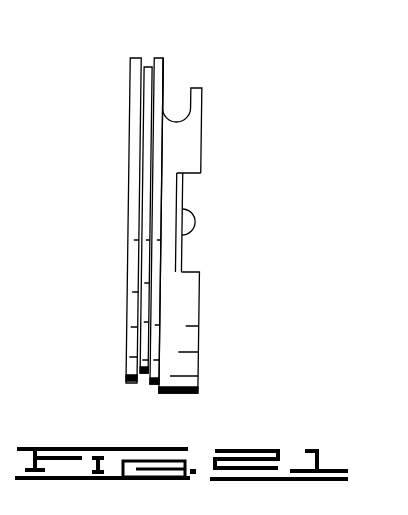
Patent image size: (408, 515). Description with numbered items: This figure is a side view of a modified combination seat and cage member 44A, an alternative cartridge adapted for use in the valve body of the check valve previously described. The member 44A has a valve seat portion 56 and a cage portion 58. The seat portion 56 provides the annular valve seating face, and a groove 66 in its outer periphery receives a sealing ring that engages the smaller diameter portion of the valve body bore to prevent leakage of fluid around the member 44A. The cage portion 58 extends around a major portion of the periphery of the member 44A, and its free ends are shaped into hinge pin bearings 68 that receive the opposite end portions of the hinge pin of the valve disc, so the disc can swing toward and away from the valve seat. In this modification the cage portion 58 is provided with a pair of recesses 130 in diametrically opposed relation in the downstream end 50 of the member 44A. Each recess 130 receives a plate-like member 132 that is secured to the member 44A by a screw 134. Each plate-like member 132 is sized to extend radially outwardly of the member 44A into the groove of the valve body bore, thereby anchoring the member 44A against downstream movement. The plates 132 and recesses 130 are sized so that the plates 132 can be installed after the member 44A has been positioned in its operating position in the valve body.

The combination seat and cage member 44A is at (126, 73).
The valve seat portion 56 is at (135, 158).
The groove 66 is at (148, 65).
The cage portion 58 is at (187, 132).
The hinge pin bearings 68 is at (181, 118).
The recess 130 is at (188, 175).
The plate-like member 132 is at (178, 258).
The screw 134 is at (190, 220).
The downstream end 50 is at (198, 311).